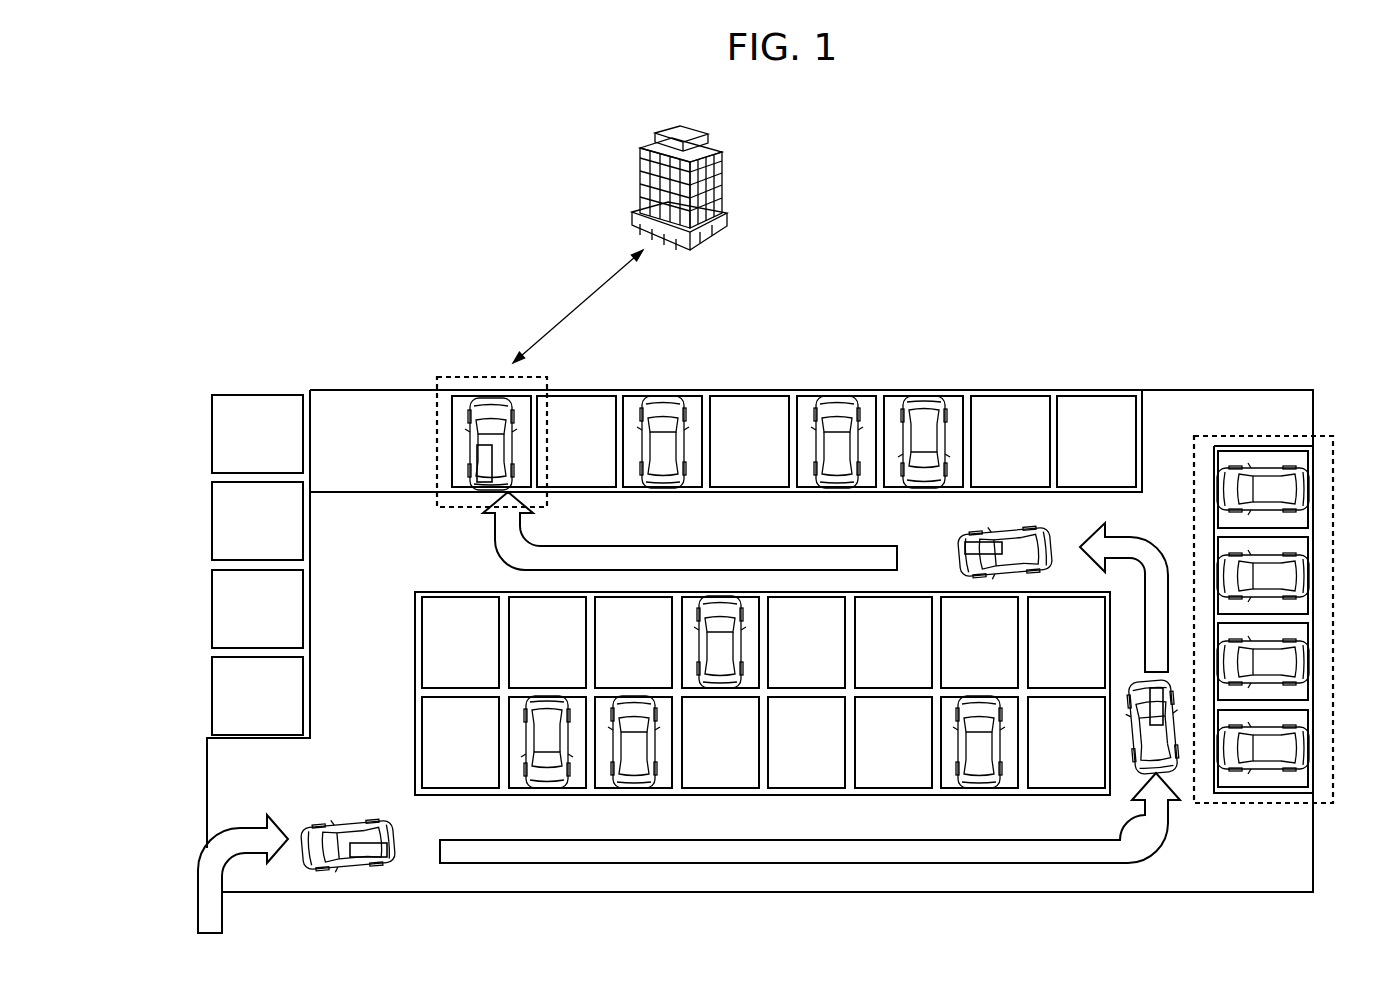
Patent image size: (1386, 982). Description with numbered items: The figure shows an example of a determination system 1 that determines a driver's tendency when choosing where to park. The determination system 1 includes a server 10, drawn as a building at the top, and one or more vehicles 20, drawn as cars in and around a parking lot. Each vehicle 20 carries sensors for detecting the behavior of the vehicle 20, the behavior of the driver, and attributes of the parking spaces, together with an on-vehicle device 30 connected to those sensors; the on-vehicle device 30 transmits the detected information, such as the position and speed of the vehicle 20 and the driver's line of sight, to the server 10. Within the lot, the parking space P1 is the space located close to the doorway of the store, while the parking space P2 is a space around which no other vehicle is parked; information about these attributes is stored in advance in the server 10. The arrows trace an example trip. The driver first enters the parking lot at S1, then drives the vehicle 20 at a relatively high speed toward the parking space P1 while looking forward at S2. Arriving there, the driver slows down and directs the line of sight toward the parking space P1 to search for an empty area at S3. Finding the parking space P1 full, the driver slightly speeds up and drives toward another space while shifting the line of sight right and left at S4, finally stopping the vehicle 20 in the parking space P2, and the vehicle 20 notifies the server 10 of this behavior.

The determination system 1 is at (957, 197).
The server 10 is at (695, 138).
The vehicle 20 is at (493, 407).
The on-vehicle device 30 is at (483, 473).
The parking space P1 is at (1327, 437).
The parking space P2 is at (450, 375).
The entering the parking lot S1 is at (195, 875).
The driving to the parking space P1 S2 is at (890, 865).
The searching the parking space P1 S3 is at (1147, 537).
The driving to another parking space S4 is at (493, 532).